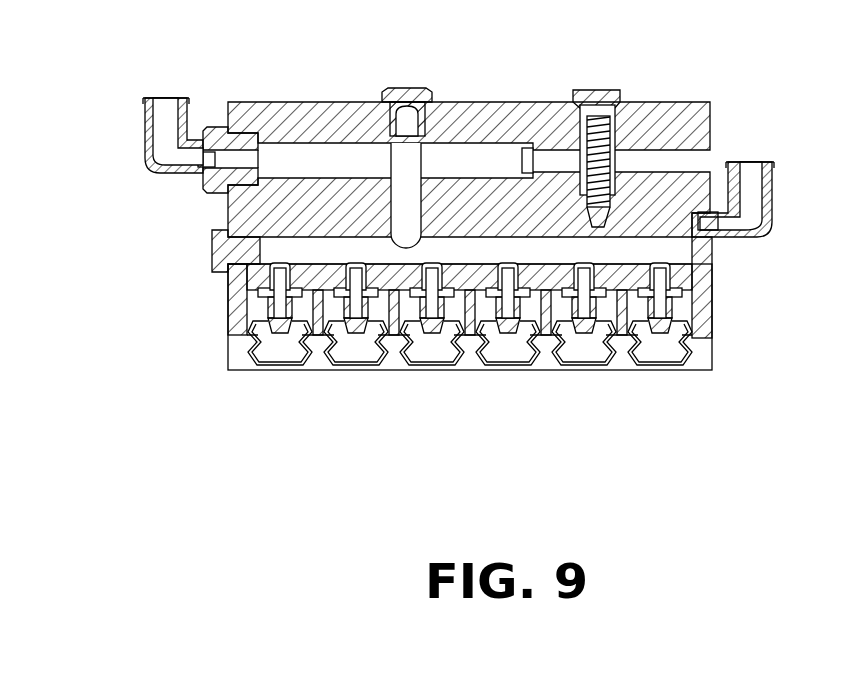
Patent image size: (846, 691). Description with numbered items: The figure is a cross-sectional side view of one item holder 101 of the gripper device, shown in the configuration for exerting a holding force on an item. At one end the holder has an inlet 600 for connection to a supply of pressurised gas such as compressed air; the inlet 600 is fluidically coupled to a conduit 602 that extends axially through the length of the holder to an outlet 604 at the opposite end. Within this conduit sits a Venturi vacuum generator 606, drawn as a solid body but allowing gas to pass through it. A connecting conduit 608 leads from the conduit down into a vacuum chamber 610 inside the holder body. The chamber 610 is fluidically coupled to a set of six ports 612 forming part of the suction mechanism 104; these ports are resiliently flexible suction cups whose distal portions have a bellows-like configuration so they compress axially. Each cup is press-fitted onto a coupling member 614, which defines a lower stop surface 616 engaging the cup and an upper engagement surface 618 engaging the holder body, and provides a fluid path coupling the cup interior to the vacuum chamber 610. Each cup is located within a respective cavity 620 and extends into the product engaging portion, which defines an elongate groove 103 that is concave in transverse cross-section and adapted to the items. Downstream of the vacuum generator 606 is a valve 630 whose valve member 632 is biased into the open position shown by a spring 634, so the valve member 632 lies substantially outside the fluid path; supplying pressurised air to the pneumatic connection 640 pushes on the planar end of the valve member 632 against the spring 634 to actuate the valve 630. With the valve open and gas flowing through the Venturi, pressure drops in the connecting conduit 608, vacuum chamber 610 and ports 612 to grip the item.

The item holder 101 is at (455, 136).
The elongate groove 103 is at (243, 355).
The suction mechanism 104 is at (420, 352).
The inlet 600 is at (158, 95).
The conduit 602 is at (233, 158).
The outlet 604 is at (697, 165).
The Venturi vacuum generator 606 is at (336, 162).
The connecting conduit 608 is at (408, 205).
The vacuum chamber 610 is at (310, 250).
The ports 612 is at (278, 367).
The coupling member 614 is at (268, 297).
The lower stop surface 616 is at (266, 303).
The upper engagement surface 618 is at (270, 287).
The cavity 620 is at (253, 317).
The valve 630 is at (586, 113).
The valve member 632 is at (582, 167).
The spring 634 is at (582, 83).
The pneumatic connection 640 is at (749, 185).